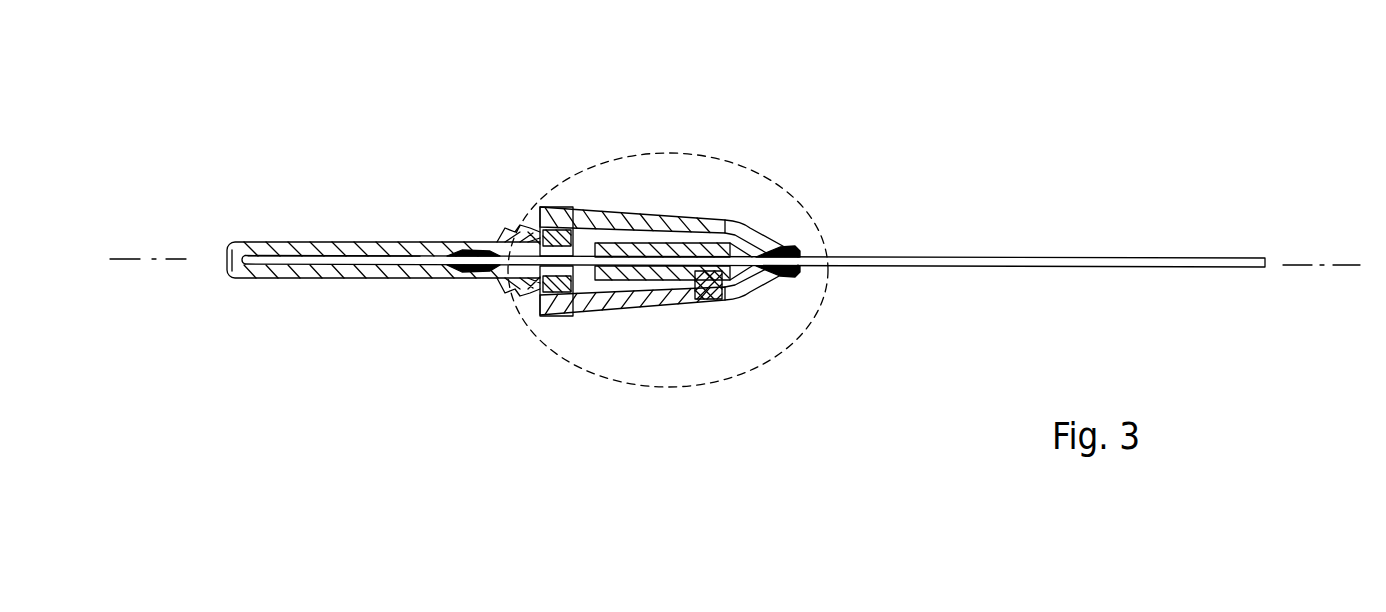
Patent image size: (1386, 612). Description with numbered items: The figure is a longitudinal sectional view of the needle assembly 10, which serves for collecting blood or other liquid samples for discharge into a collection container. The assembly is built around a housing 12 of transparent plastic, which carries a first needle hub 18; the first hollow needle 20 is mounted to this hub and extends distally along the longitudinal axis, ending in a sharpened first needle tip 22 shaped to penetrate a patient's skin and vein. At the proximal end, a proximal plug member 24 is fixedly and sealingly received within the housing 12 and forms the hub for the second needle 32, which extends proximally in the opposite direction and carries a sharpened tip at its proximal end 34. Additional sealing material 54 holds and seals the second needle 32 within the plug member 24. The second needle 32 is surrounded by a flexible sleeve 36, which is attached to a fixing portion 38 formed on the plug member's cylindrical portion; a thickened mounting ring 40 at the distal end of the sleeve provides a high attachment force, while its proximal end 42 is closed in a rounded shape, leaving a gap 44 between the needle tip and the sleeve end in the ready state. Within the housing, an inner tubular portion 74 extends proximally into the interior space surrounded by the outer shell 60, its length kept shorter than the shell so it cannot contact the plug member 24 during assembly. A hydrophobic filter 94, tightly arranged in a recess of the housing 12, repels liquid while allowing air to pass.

The needle assembly 10 is at (751, 112).
The housing 12 is at (663, 218).
The first needle hub 18 is at (747, 265).
The first hollow needle 20 is at (1020, 258).
The first needle tip 22 is at (1245, 265).
The proximal plug member 24 is at (545, 318).
The second needle 32 is at (362, 262).
The proximal end of the second needle 34 is at (297, 254).
The flexible sleeve 36 is at (380, 243).
The fixing portion 38 is at (475, 278).
The thickened mounting ring 40 is at (483, 240).
The proximal end of the flexible sleeve 42 is at (233, 270).
The gap 44 is at (268, 242).
The sealing material 54 is at (461, 242).
The outer shell 60 is at (608, 212).
The inner tubular portion 74 is at (663, 283).
The filter 94 is at (722, 272).